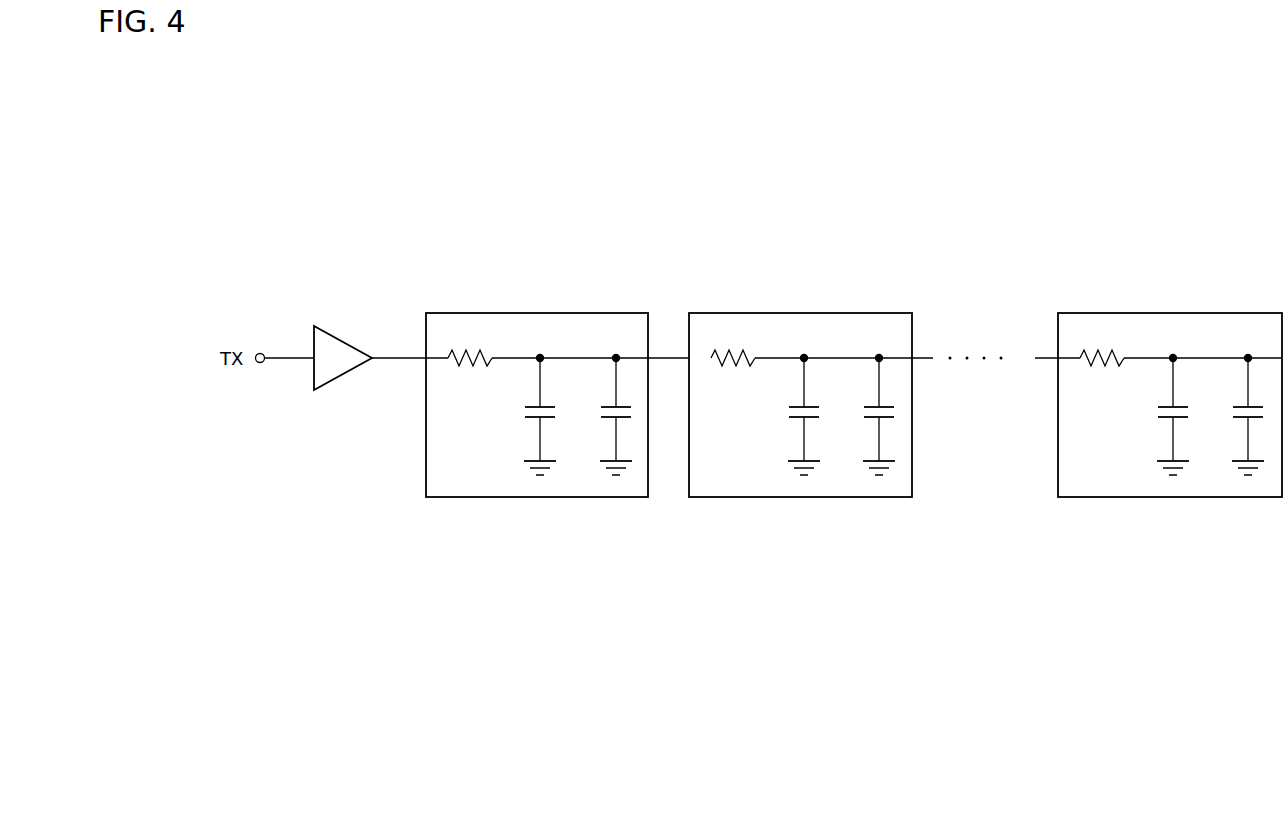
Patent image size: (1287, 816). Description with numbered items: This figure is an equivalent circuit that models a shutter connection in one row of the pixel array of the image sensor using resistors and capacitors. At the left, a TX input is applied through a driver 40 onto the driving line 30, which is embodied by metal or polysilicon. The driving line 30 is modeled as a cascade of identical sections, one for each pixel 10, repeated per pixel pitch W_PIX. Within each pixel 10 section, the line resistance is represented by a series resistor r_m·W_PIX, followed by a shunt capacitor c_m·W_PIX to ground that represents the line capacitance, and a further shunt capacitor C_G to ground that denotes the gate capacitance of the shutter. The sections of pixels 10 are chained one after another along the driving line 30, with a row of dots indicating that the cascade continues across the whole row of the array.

The pixel 10 is at (538, 313).
The driving line 30 is at (395, 357).
The driver 40 is at (312, 340).